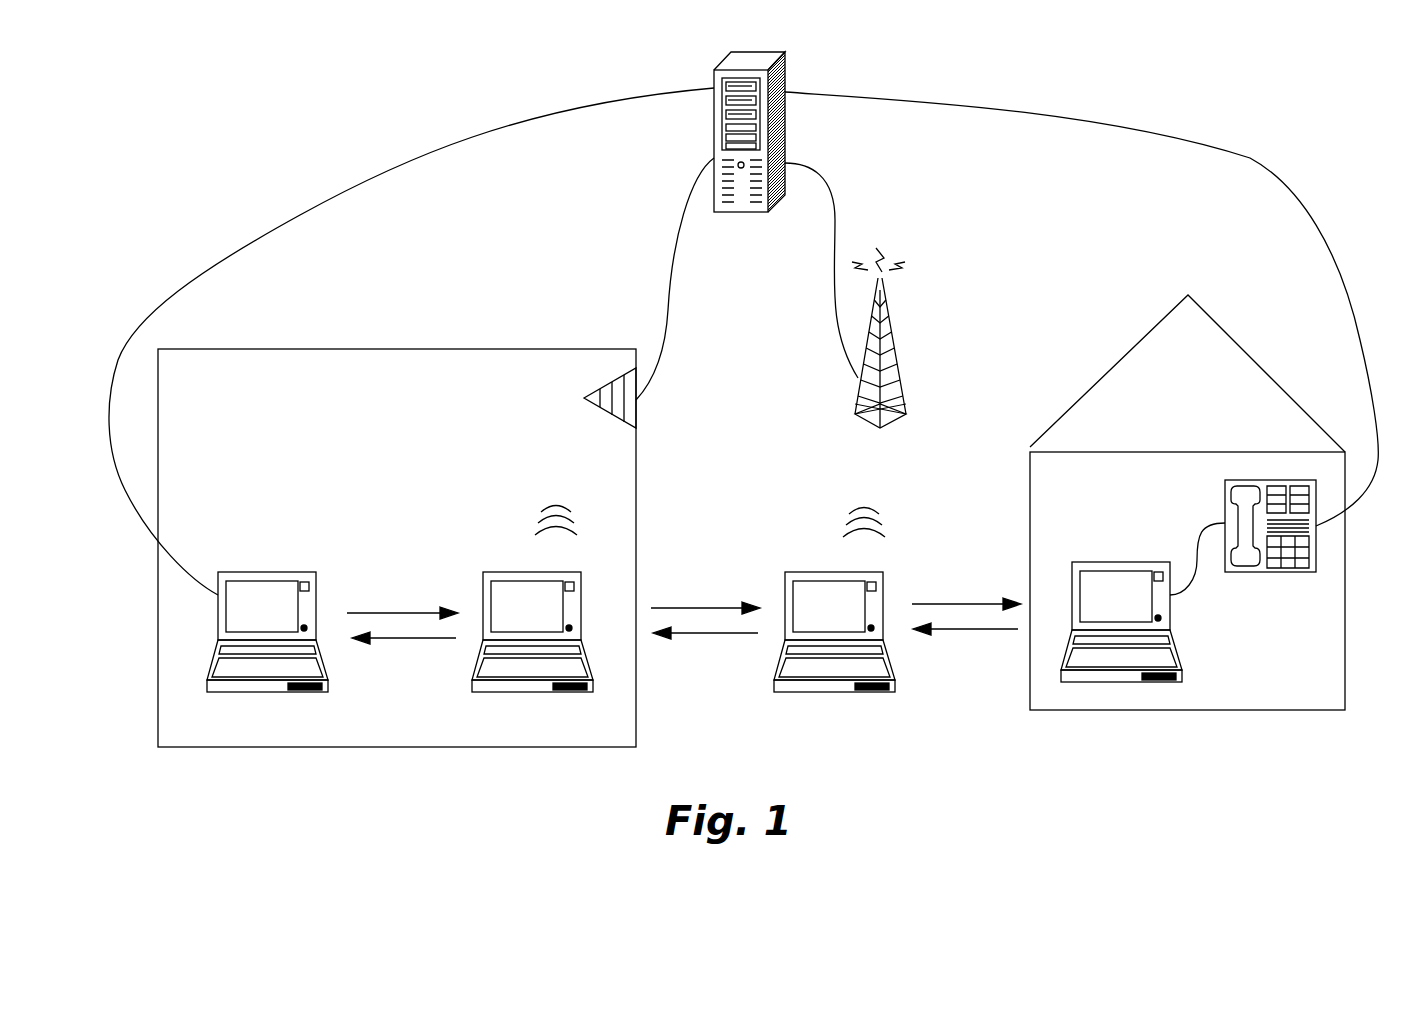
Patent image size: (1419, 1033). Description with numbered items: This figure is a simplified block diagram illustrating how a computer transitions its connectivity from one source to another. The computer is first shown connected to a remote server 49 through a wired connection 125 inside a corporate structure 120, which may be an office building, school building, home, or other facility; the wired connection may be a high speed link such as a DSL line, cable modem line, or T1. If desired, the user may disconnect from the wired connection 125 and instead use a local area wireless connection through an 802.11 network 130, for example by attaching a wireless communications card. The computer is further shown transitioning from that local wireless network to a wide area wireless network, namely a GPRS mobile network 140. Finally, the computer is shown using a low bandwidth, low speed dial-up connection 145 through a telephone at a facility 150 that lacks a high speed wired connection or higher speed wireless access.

The remote server 49 is at (785, 72).
The corporate structure 120 is at (473, 348).
The wired connection 125 is at (294, 491).
The 802.11 network 130 is at (522, 458).
The GPRS mobile network 140 is at (915, 455).
The dial-up connection 145 is at (1316, 560).
The facility 150 is at (1226, 331).